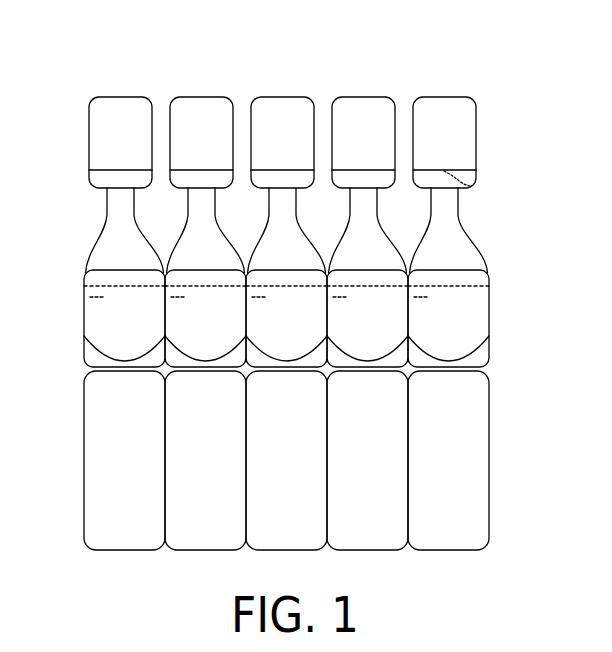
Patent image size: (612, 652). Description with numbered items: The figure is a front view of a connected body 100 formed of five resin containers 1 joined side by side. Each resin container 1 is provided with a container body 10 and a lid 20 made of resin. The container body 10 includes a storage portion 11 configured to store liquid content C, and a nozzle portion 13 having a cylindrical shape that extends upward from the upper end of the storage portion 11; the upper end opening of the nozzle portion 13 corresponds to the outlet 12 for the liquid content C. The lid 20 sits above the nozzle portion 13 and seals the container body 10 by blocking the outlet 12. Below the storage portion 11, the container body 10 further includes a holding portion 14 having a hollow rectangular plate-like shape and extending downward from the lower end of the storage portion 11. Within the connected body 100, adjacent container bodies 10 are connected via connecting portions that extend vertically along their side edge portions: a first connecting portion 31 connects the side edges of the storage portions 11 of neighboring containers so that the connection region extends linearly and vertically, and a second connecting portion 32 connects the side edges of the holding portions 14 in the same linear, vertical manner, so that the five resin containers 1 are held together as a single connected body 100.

The connected body 100 is at (60, 21).
The resin container 1 is at (125, 93).
The lid 20 is at (477, 141).
The outlet 12 is at (460, 178).
The nozzle portion 13 is at (447, 208).
The container body 10 is at (486, 262).
The storage portion 11 is at (491, 286).
The liquid content C is at (480, 312).
The holding portion 14 is at (490, 420).
The first connecting portion 31 is at (169, 313).
The second connecting portion 32 is at (166, 483).